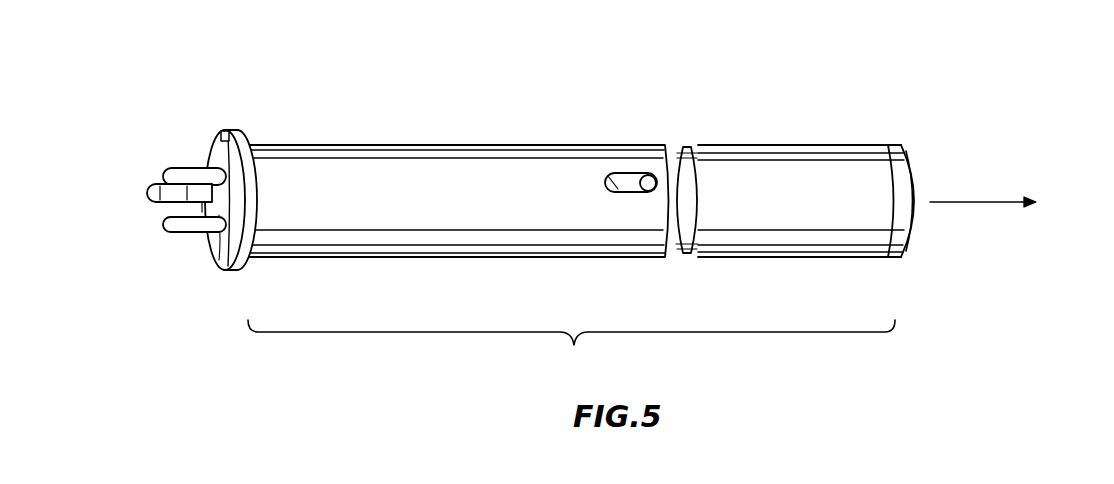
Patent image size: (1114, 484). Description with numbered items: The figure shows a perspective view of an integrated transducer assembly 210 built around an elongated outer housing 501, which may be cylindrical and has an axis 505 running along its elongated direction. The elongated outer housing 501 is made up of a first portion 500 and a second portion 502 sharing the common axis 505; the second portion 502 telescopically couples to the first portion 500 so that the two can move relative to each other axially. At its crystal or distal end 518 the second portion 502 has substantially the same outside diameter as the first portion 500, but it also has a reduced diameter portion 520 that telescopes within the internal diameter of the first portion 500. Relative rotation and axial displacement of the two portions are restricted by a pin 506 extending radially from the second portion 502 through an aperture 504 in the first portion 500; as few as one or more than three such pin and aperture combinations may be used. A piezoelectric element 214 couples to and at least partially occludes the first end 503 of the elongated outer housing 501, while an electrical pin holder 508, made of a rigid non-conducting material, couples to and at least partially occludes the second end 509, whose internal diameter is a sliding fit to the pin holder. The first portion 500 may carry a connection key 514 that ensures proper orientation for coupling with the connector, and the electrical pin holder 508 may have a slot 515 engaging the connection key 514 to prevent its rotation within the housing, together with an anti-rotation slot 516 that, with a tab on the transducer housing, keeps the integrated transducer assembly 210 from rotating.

The integrated transducer assembly 210 is at (215, 86).
The piezoelectric element 214 is at (921, 175).
The first portion 500 is at (392, 146).
The elongated outer housing 501 is at (574, 345).
The second portion 502 is at (805, 147).
The first end 503 is at (920, 249).
The aperture 504 is at (614, 172).
The axis 505 is at (991, 200).
The pin 506 is at (648, 193).
The electrical pin holder 508 is at (206, 150).
The second end 509 is at (198, 257).
The connection key 514 is at (149, 190).
The slot 515 is at (201, 204).
The anti-rotation slot 516 is at (227, 131).
The distal end 518 is at (872, 147).
The reduced diameter portion 520 is at (677, 150).